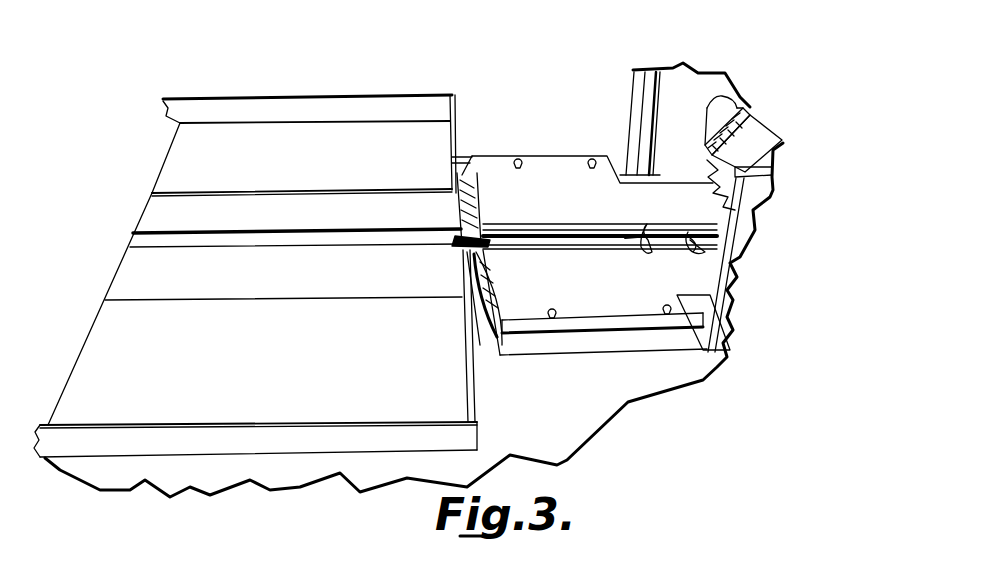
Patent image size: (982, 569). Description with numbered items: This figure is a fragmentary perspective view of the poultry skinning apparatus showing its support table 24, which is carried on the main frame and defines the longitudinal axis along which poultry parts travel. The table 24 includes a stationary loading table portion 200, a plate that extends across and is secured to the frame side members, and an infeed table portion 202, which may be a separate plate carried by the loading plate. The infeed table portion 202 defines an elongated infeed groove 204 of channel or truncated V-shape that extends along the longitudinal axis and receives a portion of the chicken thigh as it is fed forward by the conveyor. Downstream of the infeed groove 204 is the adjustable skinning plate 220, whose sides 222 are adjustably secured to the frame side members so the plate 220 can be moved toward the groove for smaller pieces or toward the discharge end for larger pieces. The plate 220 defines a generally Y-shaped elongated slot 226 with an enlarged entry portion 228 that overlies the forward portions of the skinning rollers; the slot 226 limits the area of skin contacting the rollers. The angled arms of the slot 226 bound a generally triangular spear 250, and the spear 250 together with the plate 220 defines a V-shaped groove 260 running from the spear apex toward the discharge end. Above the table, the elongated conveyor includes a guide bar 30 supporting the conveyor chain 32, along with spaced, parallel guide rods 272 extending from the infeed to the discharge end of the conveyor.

The support table 24 is at (226, 88).
The stationary loading table portion 200 is at (170, 188).
The infeed table portion 202 is at (283, 215).
The infeed groove 204 is at (360, 235).
The adjustable skinning plate 220 is at (556, 170).
The sides of skinning plate 222 is at (502, 160).
The elongated slot 226 is at (565, 235).
The enlarged entry portion 228 is at (452, 254).
The spear 250 is at (647, 243).
The groove 260 is at (690, 232).
The guide rods 272 is at (706, 143).
The guide bar 30 is at (750, 135).
The conveyor chain 32 is at (713, 142).